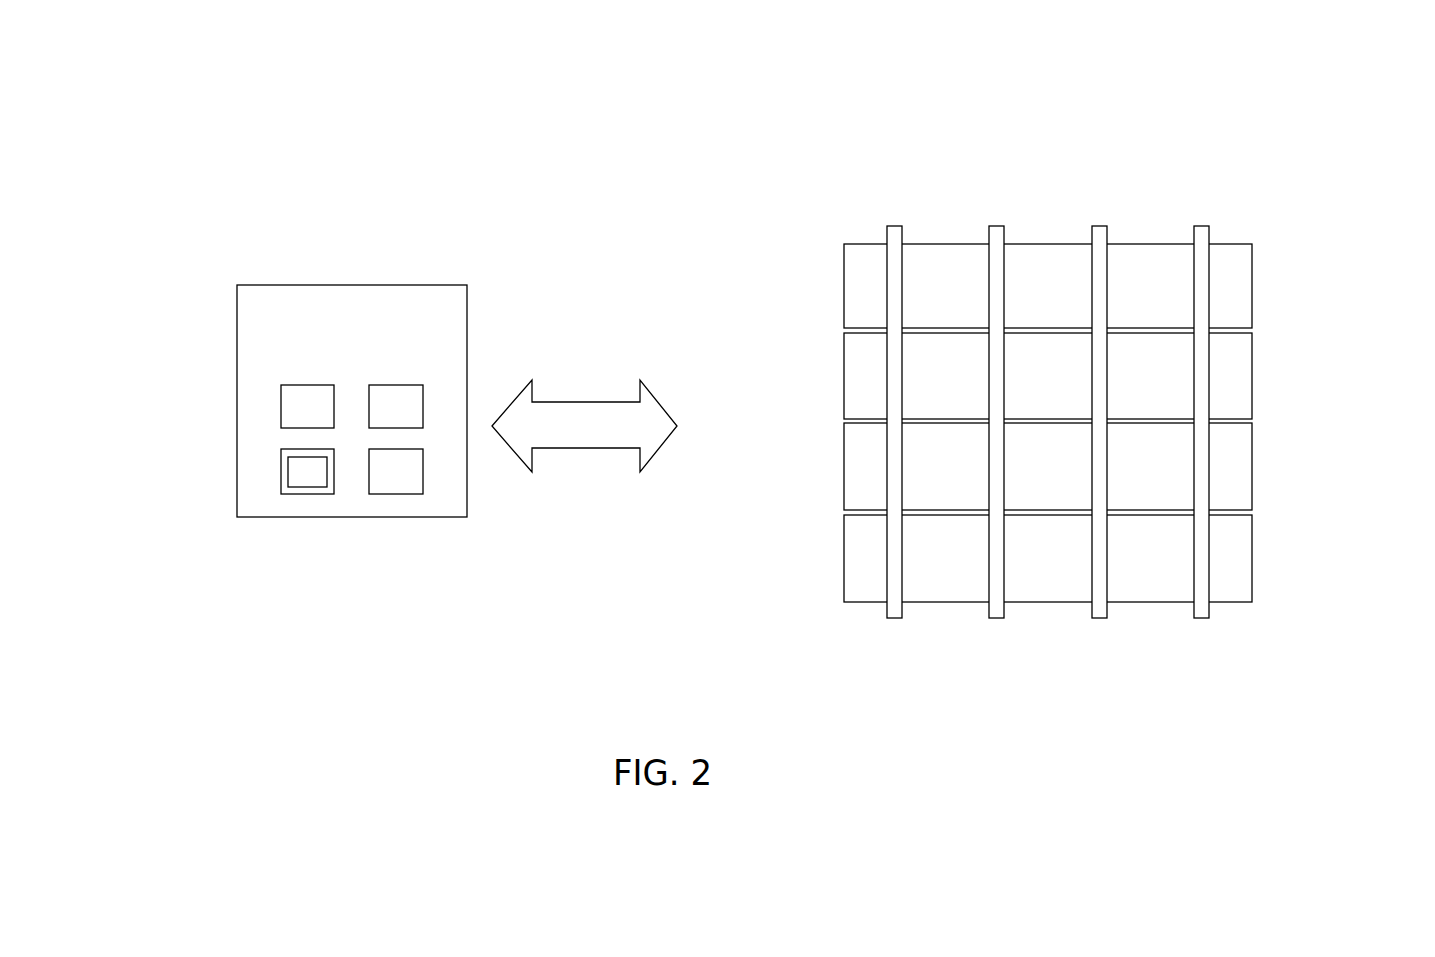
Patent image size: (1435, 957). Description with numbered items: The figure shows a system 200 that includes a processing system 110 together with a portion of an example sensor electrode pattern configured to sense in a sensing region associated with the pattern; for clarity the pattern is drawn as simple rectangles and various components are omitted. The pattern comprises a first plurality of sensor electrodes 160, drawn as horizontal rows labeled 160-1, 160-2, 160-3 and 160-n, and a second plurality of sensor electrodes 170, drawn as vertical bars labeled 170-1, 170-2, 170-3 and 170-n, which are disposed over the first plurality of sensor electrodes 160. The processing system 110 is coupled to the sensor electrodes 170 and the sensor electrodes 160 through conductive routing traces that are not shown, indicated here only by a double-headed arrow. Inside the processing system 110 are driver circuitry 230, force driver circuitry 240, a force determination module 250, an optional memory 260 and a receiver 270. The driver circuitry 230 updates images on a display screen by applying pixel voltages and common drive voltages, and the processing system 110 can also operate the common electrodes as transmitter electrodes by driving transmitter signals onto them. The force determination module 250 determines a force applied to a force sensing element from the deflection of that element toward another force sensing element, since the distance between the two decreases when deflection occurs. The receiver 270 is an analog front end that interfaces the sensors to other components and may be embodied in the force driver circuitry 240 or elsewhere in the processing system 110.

The processing system 110 is at (372, 374).
The driver circuitry 230 is at (281, 407).
The force driver circuitry 240 is at (309, 494).
The force determination module 250 is at (393, 494).
The memory 260 is at (423, 422).
The receiver 270 is at (288, 471).
The system 200 is at (1158, 86).
The first plurality of sensor electrodes 160 is at (816, 230).
The sensor electrode 160-1 is at (1235, 282).
The sensor electrode 160-2 is at (1235, 365).
The sensor electrode 160-3 is at (1235, 457).
The sensor electrode 160-n is at (1235, 547).
The second plurality of sensor electrodes 170 is at (1225, 215).
The sensor electrode 170-1 is at (893, 619).
The sensor electrode 170-2 is at (995, 619).
The sensor electrode 170-3 is at (1098, 619).
The sensor electrode 170-n is at (1200, 619).